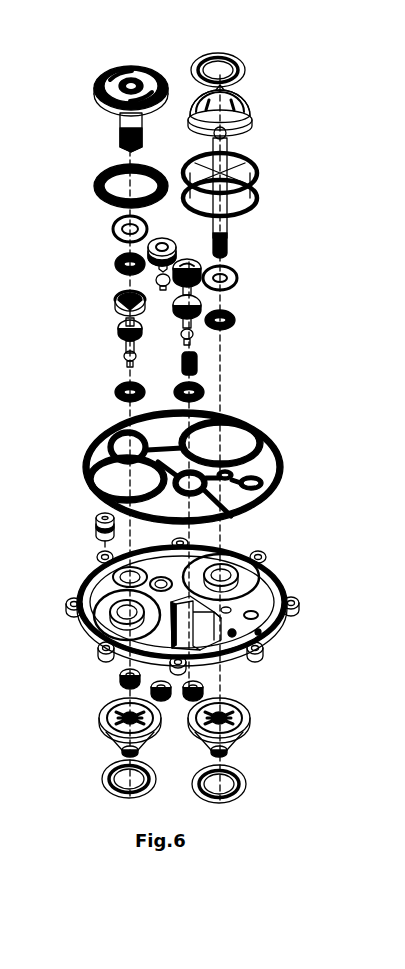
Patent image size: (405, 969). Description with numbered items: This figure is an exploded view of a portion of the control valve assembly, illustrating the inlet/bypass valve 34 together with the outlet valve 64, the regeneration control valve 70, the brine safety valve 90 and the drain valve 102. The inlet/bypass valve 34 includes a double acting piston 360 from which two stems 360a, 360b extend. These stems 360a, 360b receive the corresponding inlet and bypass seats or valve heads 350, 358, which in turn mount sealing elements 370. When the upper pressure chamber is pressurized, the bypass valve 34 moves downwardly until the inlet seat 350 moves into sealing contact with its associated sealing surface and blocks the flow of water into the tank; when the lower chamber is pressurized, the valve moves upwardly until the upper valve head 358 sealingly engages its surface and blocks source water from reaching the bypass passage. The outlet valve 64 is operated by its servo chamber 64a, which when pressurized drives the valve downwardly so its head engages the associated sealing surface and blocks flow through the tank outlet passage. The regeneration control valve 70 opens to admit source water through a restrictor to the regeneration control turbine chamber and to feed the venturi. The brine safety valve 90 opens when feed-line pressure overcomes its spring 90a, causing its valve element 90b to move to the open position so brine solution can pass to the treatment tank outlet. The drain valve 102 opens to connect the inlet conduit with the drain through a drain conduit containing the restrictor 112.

The inlet/bypass valve 34 is at (211, 435).
The outlet valve 64 is at (112, 137).
The pressure chamber 64a is at (100, 717).
The regeneration control valve 70 is at (147, 253).
The brine safety valve 90 is at (200, 306).
The spring 90a is at (198, 363).
The valve element 90b is at (206, 692).
The drain valve 102 is at (118, 292).
The restrictor 112 is at (93, 532).
The inlet seat 350 is at (250, 720).
The upper valve head 358 is at (252, 103).
The double acting piston 360 is at (267, 194).
The stem 360a is at (226, 240).
The stem 360b is at (255, 165).
The sealing elements 370 is at (245, 73).